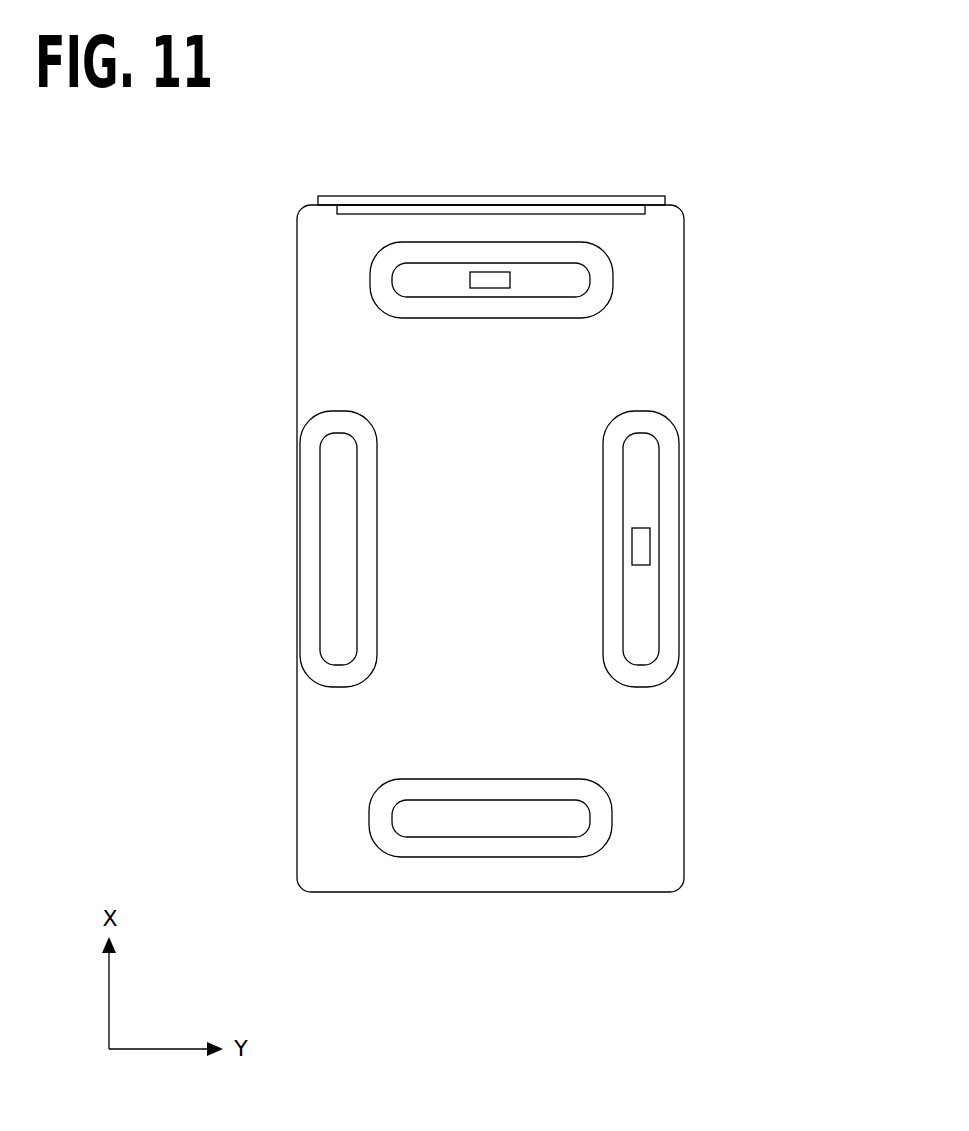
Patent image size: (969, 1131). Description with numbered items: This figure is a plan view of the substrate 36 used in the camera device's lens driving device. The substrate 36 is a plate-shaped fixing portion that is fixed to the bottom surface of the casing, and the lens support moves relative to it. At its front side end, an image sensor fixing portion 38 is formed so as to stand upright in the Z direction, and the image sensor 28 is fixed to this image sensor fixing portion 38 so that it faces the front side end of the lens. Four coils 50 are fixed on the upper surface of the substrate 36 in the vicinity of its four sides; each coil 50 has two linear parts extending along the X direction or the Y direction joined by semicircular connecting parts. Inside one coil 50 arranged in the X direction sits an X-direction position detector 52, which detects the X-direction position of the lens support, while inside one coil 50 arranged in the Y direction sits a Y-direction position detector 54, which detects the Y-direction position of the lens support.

The image sensor 28 is at (632, 208).
The substrate 36 is at (690, 393).
The image sensor fixing portion 38 is at (452, 197).
The coil 50 is at (602, 277).
The X-direction position detector 52 is at (492, 282).
The Y-direction position detector 54 is at (643, 545).